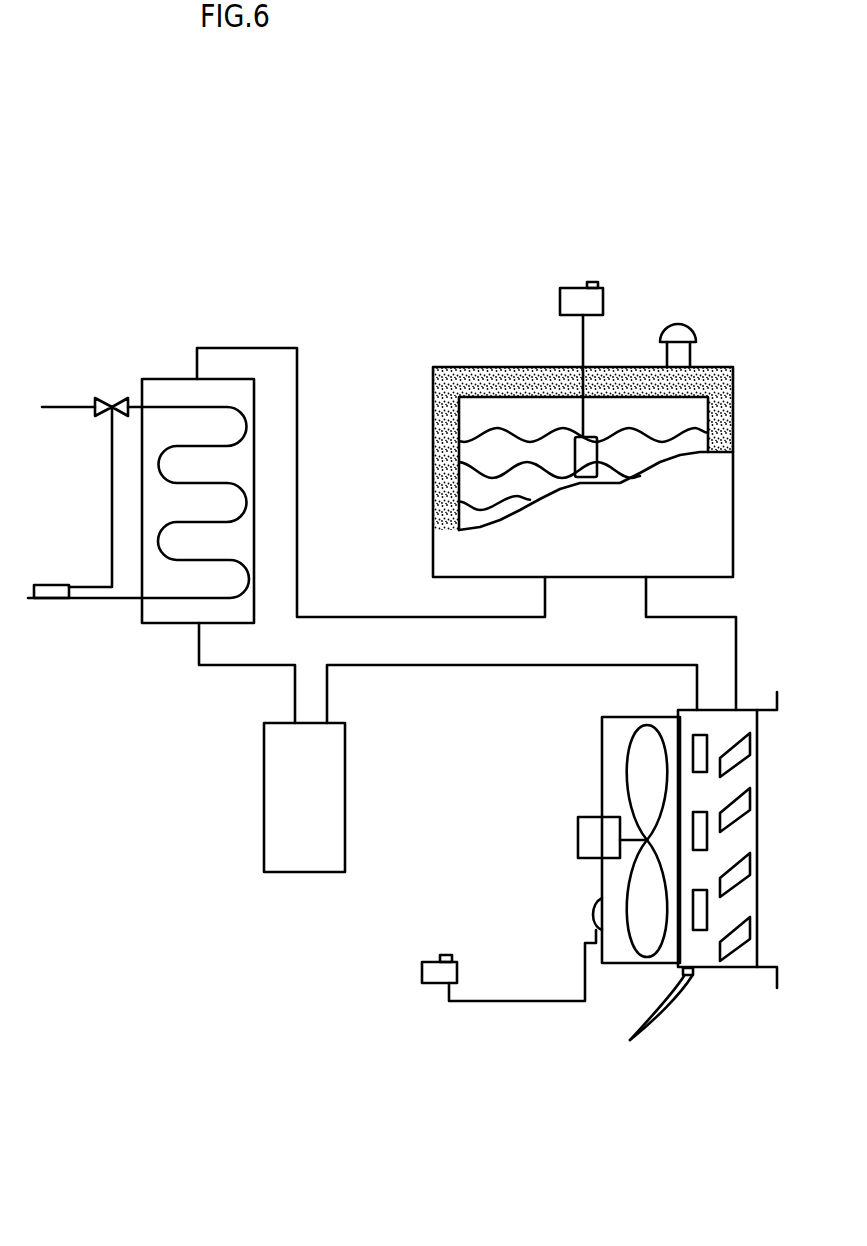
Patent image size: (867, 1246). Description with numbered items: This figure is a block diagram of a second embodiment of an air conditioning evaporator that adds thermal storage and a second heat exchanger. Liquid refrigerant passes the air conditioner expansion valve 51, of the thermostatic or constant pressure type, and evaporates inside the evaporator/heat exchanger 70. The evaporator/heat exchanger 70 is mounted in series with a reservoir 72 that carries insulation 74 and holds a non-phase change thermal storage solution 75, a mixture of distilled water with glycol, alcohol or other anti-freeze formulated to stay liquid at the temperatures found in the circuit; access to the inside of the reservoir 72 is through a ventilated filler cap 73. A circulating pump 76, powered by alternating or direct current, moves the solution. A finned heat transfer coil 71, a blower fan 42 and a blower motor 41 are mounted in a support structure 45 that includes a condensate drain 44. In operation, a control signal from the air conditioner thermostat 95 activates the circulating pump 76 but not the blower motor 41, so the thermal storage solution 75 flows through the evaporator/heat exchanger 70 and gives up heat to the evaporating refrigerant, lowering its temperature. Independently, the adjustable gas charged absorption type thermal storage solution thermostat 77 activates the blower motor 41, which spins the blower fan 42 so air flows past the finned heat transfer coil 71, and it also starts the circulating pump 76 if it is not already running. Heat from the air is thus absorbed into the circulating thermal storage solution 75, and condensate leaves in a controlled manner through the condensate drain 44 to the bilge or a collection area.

The blower motor 41 is at (588, 845).
The blower fan 42 is at (643, 942).
The condensate drain 44 is at (633, 1040).
The support structure 45 is at (607, 777).
The air conditioner expansion valve 51 is at (110, 402).
The evaporator/heat exchanger 70 is at (163, 612).
The finned heat transfer coil 71 is at (700, 972).
The reservoir 72 is at (470, 553).
The ventilated filler cap 73 is at (693, 320).
The insulation 74 is at (528, 377).
The non-phase change thermal storage solution 75 is at (477, 428).
The circulating pump 76 is at (297, 863).
The thermal storage solution thermostat 77 is at (418, 985).
The air conditioner thermostat 95 is at (575, 283).